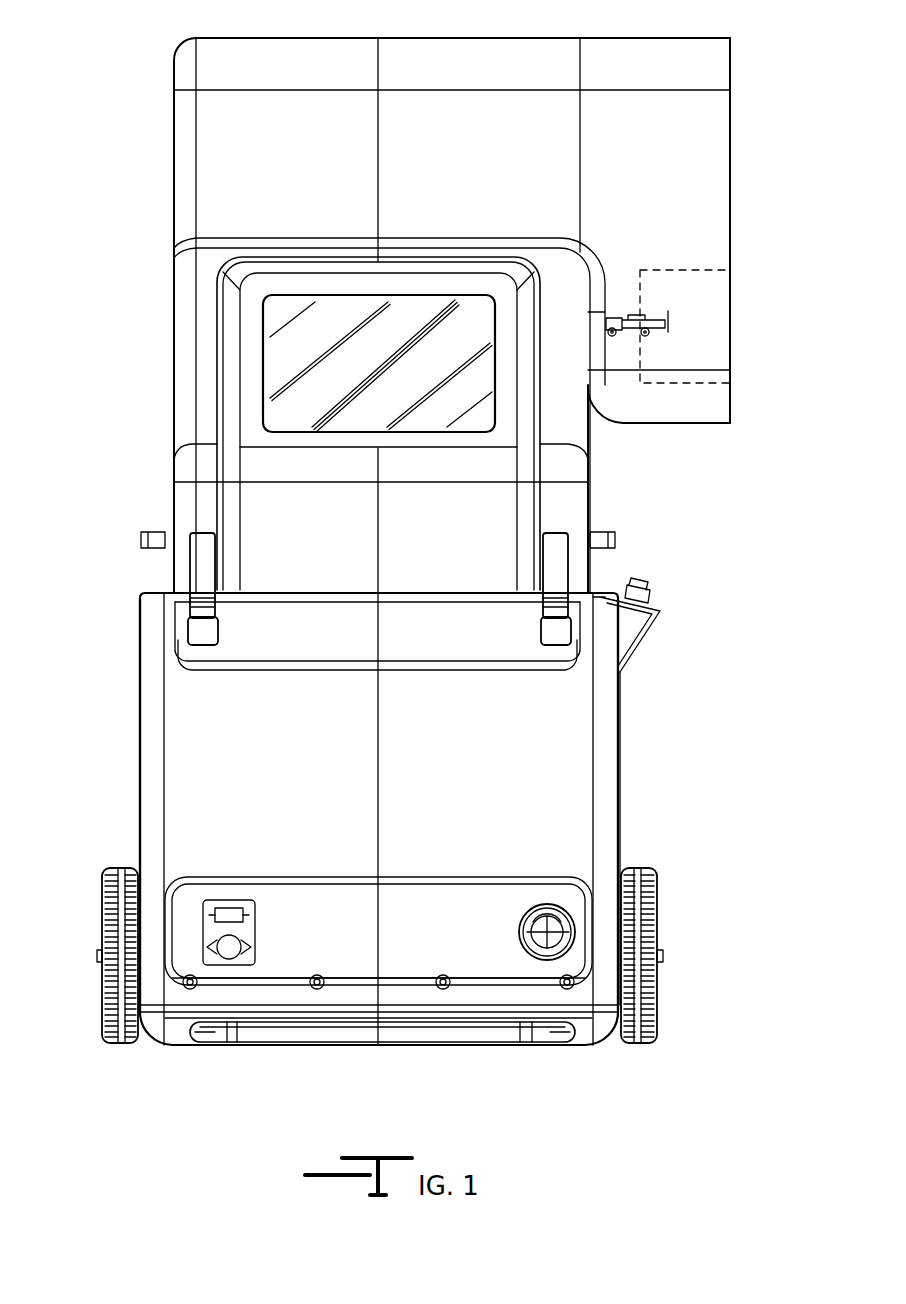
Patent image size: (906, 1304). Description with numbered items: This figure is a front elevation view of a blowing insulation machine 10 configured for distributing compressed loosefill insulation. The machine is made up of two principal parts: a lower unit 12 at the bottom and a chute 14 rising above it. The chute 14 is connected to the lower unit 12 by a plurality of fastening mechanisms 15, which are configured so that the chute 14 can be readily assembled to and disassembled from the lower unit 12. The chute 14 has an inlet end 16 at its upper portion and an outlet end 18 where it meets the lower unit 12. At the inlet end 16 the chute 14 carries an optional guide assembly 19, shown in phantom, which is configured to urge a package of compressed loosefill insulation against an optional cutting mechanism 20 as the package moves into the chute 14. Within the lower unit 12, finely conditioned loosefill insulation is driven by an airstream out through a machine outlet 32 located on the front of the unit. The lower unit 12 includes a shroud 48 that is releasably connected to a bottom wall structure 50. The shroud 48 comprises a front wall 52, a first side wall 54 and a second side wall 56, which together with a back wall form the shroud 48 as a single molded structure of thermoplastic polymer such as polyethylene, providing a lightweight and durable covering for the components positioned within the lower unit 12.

The blowing insulation machine 10 is at (135, 50).
The lower unit 12 is at (140, 786).
The chute 14 is at (173, 193).
The fastening mechanisms 15 is at (188, 575).
The inlet end 16 is at (732, 132).
The outlet end 18 is at (487, 597).
The guide assembly 19 is at (732, 290).
The cutting mechanism 20 is at (660, 338).
The machine outlet 32 is at (568, 952).
The shroud 48 is at (140, 834).
The bottom wall structure 50 is at (457, 1045).
The front wall 52 is at (568, 808).
The first side wall 54 is at (140, 689).
The second side wall 56 is at (620, 750).